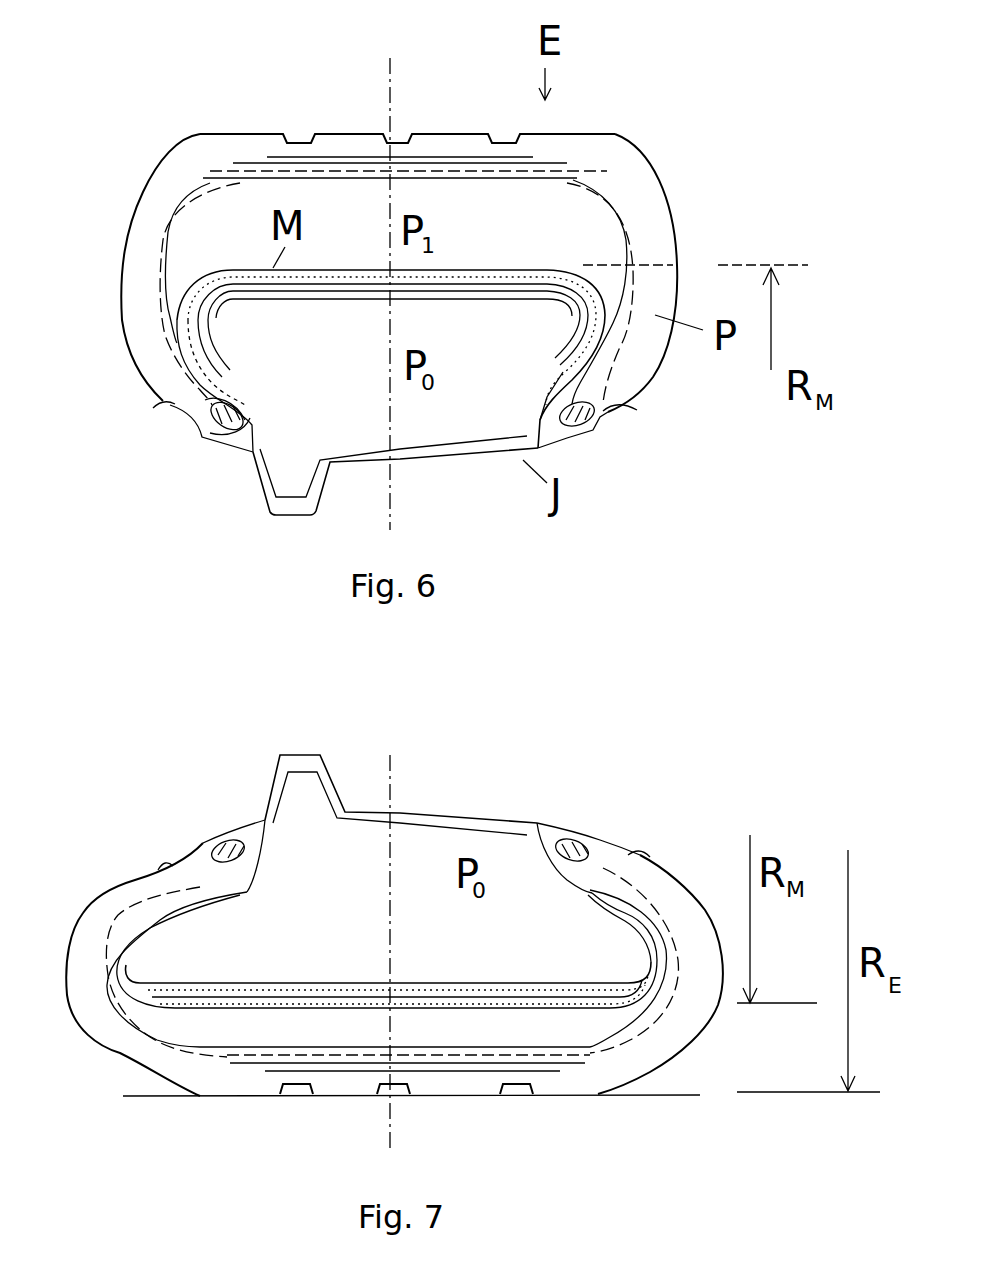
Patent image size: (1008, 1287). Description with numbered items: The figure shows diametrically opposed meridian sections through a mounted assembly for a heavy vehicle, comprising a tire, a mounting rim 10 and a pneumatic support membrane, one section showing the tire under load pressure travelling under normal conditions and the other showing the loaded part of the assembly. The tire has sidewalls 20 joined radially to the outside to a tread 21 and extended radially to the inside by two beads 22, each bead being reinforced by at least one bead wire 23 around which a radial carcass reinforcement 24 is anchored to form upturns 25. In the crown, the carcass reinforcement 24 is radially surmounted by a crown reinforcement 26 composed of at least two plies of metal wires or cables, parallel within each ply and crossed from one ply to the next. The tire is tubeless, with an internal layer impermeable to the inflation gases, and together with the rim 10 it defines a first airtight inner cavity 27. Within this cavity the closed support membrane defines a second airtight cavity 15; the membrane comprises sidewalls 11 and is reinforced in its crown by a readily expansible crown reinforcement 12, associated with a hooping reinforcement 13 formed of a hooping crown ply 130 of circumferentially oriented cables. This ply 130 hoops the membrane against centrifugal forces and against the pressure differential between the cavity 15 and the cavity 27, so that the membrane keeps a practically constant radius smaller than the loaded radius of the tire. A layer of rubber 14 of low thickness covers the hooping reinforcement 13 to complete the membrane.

In FIG. 6, the rim 10 is at (432, 452).
In FIG. 6, the sidewalls 11 is at (590, 333).
In FIG. 6, the crown reinforcement 12 is at (468, 290).
In FIG. 7, the crown reinforcement 12 is at (463, 987).
In FIG. 7, the hooping reinforcement 13 is at (368, 1003).
In FIG. 7, the hooping crown ply 130 is at (582, 987).
In FIG. 7, the layer of rubber 14 is at (197, 1007).
In FIG. 6, the second airtight cavity 15 is at (477, 399).
In FIG. 6, the sidewalls 20 is at (653, 227).
In FIG. 6, the tread 21 is at (253, 150).
In FIG. 6, the beads 22 is at (172, 386).
In FIG. 6, the bead wire 23 is at (253, 400).
In FIG. 6, the radial carcass reinforcement 24 is at (163, 242).
In FIG. 6, the upturns 25 is at (177, 380).
In FIG. 6, the crown reinforcement 26 is at (462, 157).
In FIG. 6, the first airtight inner cavity 27 is at (533, 200).